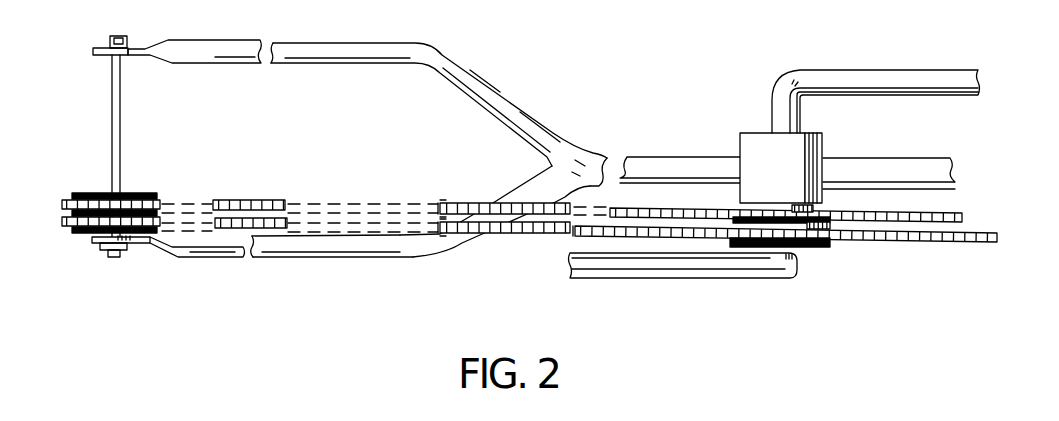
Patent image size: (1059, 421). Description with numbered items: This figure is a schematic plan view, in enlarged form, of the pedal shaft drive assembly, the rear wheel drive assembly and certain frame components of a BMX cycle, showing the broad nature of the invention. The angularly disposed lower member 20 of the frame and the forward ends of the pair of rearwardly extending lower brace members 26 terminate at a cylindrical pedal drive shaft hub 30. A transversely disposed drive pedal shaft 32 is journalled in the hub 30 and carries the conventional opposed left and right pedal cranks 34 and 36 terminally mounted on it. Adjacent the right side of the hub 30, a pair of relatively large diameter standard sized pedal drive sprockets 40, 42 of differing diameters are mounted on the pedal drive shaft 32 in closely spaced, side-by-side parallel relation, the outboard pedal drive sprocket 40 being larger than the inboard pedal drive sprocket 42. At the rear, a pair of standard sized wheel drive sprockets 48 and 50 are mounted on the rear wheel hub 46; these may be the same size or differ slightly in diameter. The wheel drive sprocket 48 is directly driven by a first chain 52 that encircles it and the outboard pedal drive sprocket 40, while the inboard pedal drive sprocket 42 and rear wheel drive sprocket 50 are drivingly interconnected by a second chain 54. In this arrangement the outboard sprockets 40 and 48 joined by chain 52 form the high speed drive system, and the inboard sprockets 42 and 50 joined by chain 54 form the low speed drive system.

The lower member 20 is at (842, 165).
The lower brace members 26 is at (344, 14).
The pedal drive shaft hub 30 is at (747, 142).
The drive pedal shaft 32 is at (790, 118).
The left pedal crank 34 is at (855, 78).
The right pedal crank 36 is at (717, 267).
The outboard pedal drive sprocket 40 is at (867, 237).
The inboard pedal drive sprocket 42 is at (882, 216).
The rear wheel hub 46 is at (122, 133).
The outboard wheel drive sprocket 48 is at (160, 218).
The inboard wheel drive sprocket 50 is at (163, 202).
The first chain 52 is at (255, 227).
The second chain 54 is at (248, 203).